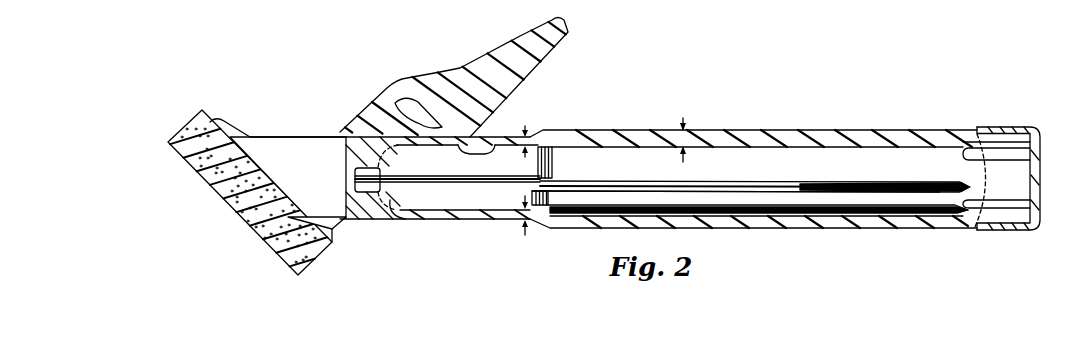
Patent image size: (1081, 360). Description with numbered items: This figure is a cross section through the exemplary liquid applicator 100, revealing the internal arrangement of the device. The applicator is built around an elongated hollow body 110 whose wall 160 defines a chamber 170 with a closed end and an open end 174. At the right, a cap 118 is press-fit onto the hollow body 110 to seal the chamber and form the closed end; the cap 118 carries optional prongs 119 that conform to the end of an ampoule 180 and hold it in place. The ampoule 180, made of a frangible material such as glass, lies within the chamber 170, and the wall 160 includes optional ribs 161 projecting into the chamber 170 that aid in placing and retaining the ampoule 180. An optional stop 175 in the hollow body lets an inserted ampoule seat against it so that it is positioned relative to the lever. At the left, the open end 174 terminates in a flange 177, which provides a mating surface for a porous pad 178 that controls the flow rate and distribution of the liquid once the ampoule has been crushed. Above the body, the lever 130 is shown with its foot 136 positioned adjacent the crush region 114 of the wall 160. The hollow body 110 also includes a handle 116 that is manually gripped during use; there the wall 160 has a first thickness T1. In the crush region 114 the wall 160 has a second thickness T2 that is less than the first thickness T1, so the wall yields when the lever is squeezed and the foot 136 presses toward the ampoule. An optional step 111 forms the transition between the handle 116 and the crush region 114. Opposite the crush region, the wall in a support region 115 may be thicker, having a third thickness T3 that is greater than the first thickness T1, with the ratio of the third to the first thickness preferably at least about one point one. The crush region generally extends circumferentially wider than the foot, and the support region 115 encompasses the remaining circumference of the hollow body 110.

The liquid applicator 100 is at (848, 61).
The elongated hollow body 110 is at (599, 124).
The step 111 is at (540, 229).
The crush region 114 is at (462, 148).
The support region 115 is at (467, 228).
The handle 116 is at (822, 137).
The cap 118 is at (1000, 127).
The prongs 119 is at (997, 202).
The lever 130 is at (416, 68).
The foot 136 is at (437, 127).
The wall 160 is at (748, 137).
The ribs 161 is at (893, 214).
The chamber 170 is at (983, 213).
The open end 174 is at (300, 160).
The stop 175 is at (400, 221).
The flange 177 is at (217, 118).
The pad 178 is at (236, 200).
The ampoule 180 is at (963, 130).
The first thickness T1 is at (684, 118).
The second thickness T2 is at (527, 125).
The third thickness T3 is at (524, 234).